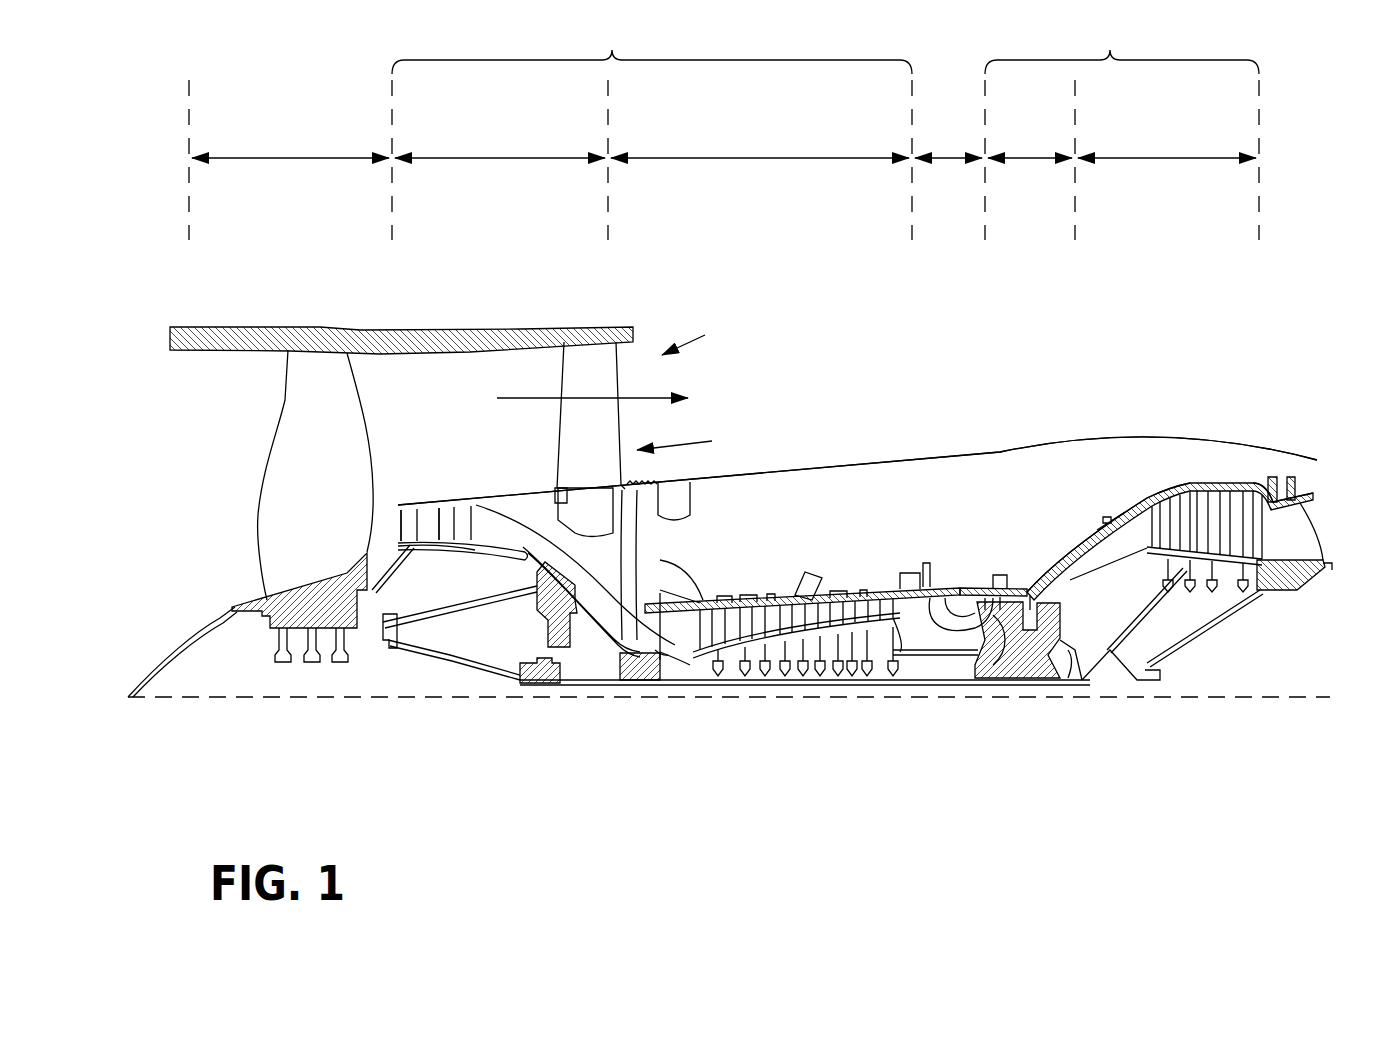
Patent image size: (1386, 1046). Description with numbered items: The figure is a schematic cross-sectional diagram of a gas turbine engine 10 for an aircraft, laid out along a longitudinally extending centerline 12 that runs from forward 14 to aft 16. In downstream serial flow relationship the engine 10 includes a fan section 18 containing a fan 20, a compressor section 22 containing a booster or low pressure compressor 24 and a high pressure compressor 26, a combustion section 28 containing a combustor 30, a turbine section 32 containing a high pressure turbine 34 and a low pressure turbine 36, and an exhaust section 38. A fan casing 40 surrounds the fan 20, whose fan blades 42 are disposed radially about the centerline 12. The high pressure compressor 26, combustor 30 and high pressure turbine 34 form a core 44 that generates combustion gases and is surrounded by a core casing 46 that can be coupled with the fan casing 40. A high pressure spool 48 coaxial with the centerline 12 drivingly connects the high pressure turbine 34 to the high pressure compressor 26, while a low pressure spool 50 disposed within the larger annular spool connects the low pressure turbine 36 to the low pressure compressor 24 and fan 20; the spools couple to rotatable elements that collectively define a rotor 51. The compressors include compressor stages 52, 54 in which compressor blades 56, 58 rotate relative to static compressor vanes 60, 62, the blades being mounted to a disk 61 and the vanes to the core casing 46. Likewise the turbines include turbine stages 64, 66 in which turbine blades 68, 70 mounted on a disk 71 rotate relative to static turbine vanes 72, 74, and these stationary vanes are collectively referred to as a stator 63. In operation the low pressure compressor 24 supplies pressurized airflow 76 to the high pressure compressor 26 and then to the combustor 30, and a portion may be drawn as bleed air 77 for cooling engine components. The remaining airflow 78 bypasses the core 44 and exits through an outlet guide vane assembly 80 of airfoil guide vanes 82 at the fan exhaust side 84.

The gas turbine engine 10 is at (945, 316).
The centerline 12 is at (290, 700).
The forward 14 is at (138, 463).
The aft 16 is at (1350, 552).
The fan section 18 is at (290, 145).
The fan 20 is at (227, 538).
The compressor section 22 is at (652, 46).
The low pressure compressor 24 is at (500, 145).
The high pressure compressor 26 is at (760, 145).
The combustion section 28 is at (948, 140).
The combustor 30 is at (948, 605).
The turbine section 32 is at (1122, 46).
The high pressure turbine 34 is at (1030, 145).
The low pressure turbine 36 is at (1167, 145).
The exhaust section 38 is at (1333, 505).
The fan casing 40 is at (432, 327).
The fan blades 42 is at (345, 402).
The core 44 is at (893, 500).
The core casing 46 is at (1125, 505).
The HP spool 48 is at (925, 655).
The LP spool 50 is at (541, 688).
The rotor 51 is at (798, 690).
The compressor stages 52 is at (450, 447).
The compressor stages 54 is at (745, 494).
The compressor blades 56 is at (430, 507).
The compressor blades 58 is at (670, 590).
The static compressor vanes 60 is at (407, 507).
The disk 61 is at (427, 553).
The static compressor vanes 62 is at (687, 583).
The stator 63 is at (1188, 478).
The turbine stages 64 is at (980, 502).
The turbine stages 66 is at (1240, 378).
The turbine blades 68 is at (980, 593).
The turbine blades 70 is at (1240, 500).
The disk 71 is at (1000, 620).
The static turbine vanes 72 is at (973, 597).
The static turbine vanes 74 is at (1225, 510).
The pressurized airflow 76 is at (615, 612).
The bleed air 77 is at (792, 574).
The airflow 78 is at (520, 398).
The outlet guide vane assembly 80 is at (692, 439).
The airfoil guide vanes 82 is at (570, 437).
The fan exhaust side 84 is at (701, 340).